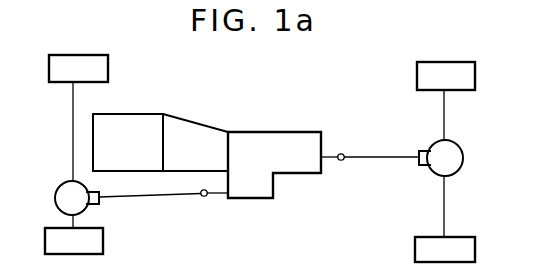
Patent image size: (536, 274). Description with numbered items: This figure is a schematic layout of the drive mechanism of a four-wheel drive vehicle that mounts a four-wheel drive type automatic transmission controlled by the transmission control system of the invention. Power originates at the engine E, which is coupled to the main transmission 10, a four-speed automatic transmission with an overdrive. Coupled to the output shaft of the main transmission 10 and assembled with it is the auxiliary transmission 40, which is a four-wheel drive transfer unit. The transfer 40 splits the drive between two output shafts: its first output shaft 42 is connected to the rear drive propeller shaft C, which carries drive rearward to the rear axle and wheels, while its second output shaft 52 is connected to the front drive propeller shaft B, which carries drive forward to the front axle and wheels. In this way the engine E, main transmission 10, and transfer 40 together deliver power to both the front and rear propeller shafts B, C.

The main transmission 10 is at (192, 129).
The auxiliary transmission 40 is at (275, 167).
The first output shaft 42 is at (330, 154).
The second output shaft 52 is at (210, 197).
The engine E is at (134, 150).
The front drive propeller shaft B is at (154, 197).
The rear drive propeller shaft C is at (387, 159).